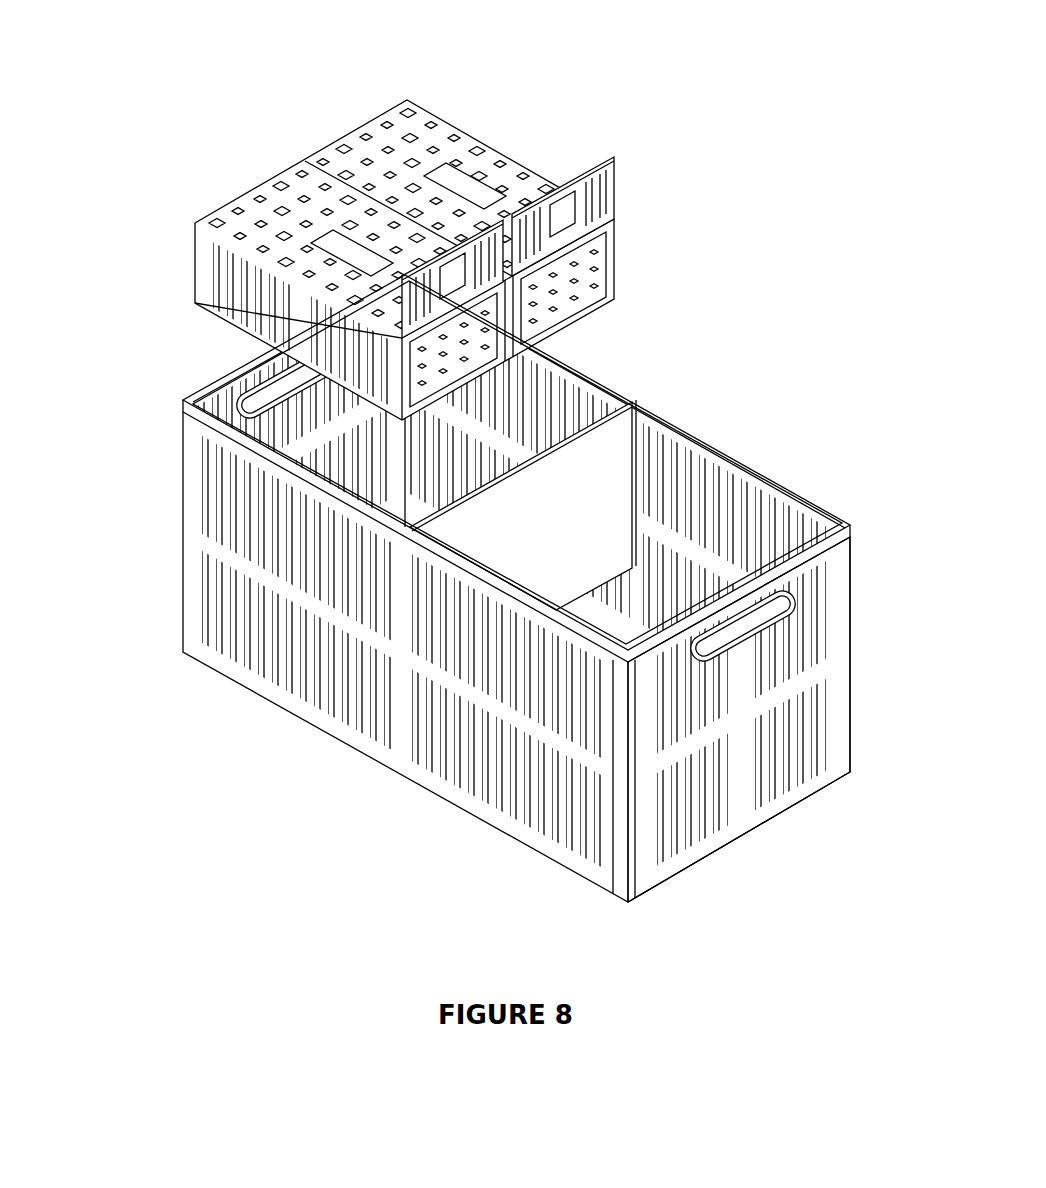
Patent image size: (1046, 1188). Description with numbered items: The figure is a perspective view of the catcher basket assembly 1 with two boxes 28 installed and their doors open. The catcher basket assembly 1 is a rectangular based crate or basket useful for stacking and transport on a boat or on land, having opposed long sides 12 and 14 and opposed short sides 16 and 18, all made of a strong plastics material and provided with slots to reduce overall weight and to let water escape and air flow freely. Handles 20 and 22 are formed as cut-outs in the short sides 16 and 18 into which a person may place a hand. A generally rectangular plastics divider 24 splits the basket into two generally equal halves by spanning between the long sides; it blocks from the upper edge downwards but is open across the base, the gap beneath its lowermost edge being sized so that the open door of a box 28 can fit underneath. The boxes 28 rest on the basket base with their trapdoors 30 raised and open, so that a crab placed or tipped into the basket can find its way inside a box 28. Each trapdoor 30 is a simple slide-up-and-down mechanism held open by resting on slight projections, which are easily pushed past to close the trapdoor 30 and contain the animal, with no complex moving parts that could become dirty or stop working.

The catcher basket assembly 1 is at (501, 475).
The long side 12 is at (197, 615).
The long side 14 is at (727, 458).
The short side 16 is at (222, 395).
The short side 18 is at (830, 660).
The handle 20 is at (270, 383).
The handle 22 is at (787, 587).
The divider 24 is at (622, 458).
The box 28 is at (490, 175).
The trapdoor 30 is at (576, 190).